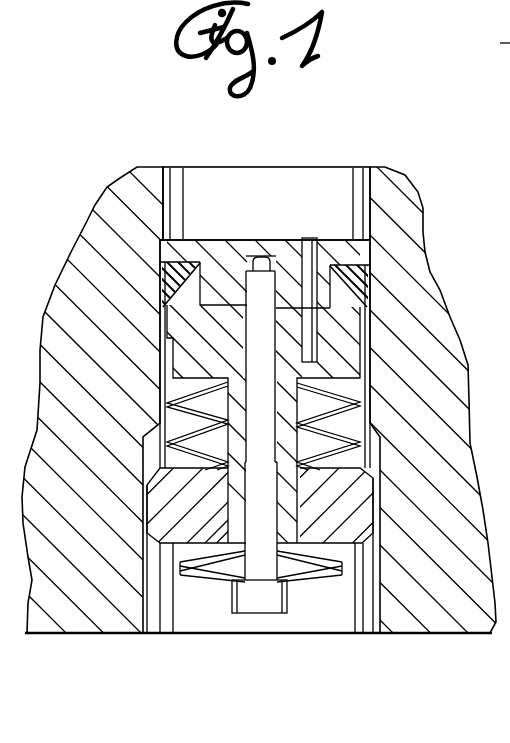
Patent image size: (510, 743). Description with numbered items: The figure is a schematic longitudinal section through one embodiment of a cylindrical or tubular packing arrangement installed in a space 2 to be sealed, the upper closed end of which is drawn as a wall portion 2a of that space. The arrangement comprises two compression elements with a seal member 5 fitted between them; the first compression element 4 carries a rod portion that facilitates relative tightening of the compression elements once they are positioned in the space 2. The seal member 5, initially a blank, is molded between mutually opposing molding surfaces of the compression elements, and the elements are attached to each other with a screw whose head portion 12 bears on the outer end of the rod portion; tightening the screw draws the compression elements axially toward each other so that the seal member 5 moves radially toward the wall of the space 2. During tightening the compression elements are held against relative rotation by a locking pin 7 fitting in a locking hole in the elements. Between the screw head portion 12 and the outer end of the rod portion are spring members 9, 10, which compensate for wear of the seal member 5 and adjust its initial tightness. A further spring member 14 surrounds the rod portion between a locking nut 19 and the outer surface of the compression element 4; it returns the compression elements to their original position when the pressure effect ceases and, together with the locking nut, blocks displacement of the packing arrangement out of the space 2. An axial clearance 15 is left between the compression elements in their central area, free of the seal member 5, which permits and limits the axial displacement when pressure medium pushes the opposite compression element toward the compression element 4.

The space to be sealed 2 is at (165, 187).
The cover plate 2a is at (268, 188).
The first compression element 4 is at (160, 357).
The seal member 5 is at (255, 371).
The locking pin 7 is at (316, 340).
The spring member 9 is at (210, 575).
The spring member 10 is at (210, 575).
The head portion 12 is at (256, 598).
The spring member 14 is at (162, 378).
The axial clearance 15 is at (217, 302).
The locking nut 19 is at (357, 537).